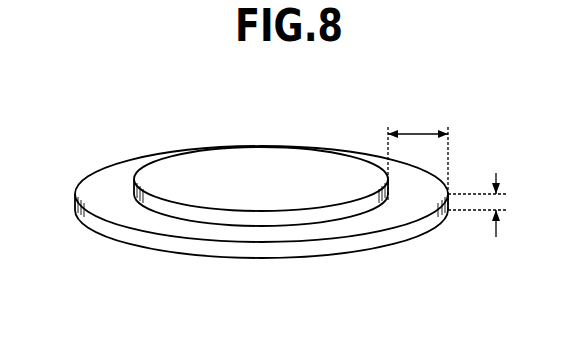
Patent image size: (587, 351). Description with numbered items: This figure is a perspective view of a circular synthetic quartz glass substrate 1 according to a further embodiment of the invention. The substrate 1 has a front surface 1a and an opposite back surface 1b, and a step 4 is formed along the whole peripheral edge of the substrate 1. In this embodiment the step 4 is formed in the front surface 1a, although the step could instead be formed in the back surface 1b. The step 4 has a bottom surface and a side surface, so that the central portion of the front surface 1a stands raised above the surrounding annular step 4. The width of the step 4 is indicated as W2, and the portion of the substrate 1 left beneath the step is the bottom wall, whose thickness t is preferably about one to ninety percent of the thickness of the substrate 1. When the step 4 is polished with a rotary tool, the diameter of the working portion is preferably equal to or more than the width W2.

The synthetic quartz glass substrate 1 is at (258, 191).
The front surface 1a is at (288, 180).
The back surface 1b is at (333, 258).
The step 4 is at (108, 188).
The width of the step W2 is at (418, 158).
The thickness of the bottom wall t is at (499, 203).